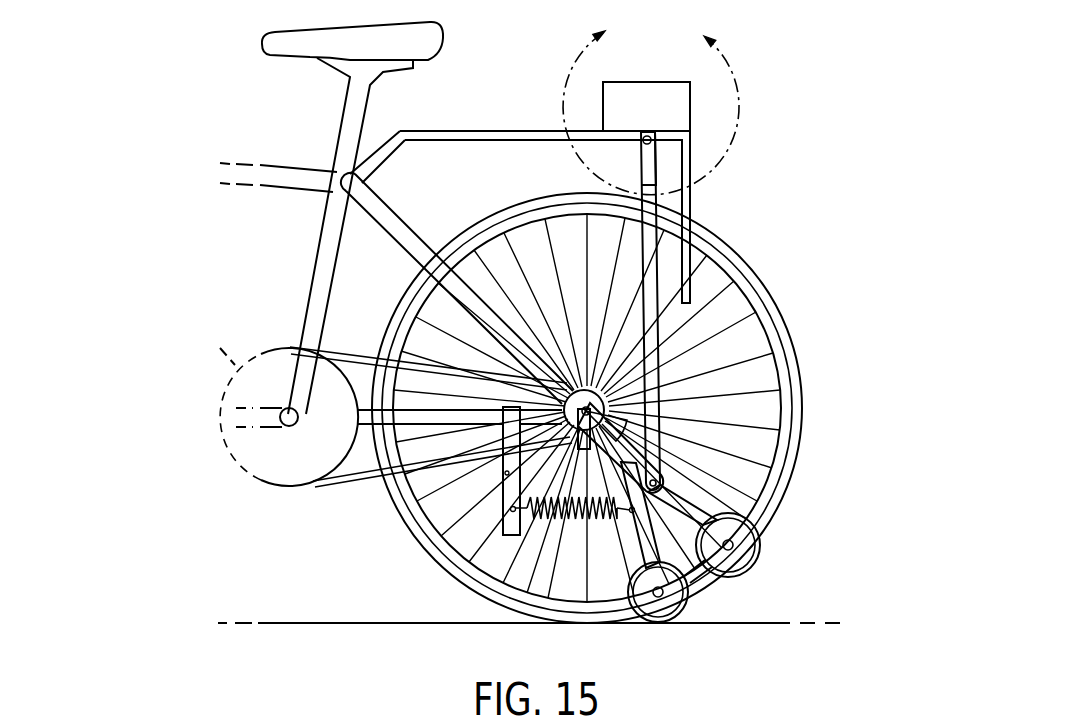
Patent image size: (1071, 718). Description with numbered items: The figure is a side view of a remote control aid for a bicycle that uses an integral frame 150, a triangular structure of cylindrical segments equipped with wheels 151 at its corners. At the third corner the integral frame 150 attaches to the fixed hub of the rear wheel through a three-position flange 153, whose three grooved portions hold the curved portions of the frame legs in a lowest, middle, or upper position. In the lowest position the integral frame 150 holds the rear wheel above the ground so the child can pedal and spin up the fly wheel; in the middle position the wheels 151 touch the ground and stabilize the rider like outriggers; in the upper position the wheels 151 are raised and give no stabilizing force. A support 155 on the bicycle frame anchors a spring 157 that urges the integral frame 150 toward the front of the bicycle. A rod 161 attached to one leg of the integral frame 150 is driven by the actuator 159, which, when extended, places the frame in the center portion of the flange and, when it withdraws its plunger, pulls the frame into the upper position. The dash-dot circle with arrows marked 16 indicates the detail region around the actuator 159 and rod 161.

The section view indicator 16 is at (651, 102).
The actuator 159 is at (648, 86).
The rod 161 is at (643, 173).
The three-position flange 153 is at (645, 375).
The support 155 is at (507, 473).
The spring 157 is at (538, 530).
The integral frame 150 is at (700, 580).
The wheels 151 is at (760, 548).